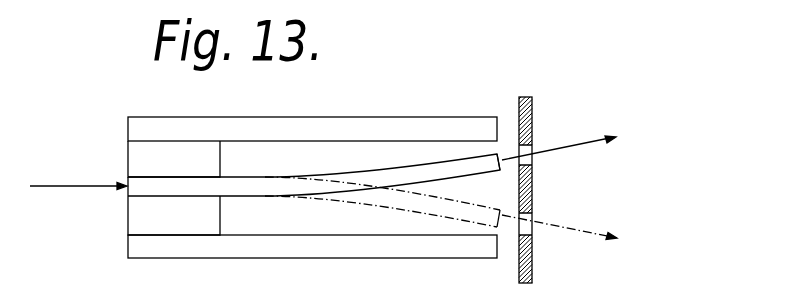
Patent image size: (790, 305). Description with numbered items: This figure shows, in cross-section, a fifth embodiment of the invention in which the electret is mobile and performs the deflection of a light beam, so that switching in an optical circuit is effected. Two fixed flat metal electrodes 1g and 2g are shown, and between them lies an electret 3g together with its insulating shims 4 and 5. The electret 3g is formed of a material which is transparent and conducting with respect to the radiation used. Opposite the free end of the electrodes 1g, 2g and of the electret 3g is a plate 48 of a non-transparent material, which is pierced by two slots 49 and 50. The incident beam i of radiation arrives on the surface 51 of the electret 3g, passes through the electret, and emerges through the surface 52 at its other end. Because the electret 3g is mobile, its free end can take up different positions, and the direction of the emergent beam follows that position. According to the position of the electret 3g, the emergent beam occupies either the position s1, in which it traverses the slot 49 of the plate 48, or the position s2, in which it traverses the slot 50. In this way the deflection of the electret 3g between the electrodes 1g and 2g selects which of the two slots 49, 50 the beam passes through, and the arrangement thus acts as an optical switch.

The fixed flat metal electrode 1g is at (307, 128).
The fixed flat metal electrode 2g is at (298, 250).
The electret 3g is at (405, 172).
The insulating shim 4 is at (148, 163).
The insulating shim 5 is at (150, 215).
The surface of the electret 51 is at (127, 192).
The surface of the electret 52 is at (500, 153).
The plate 48 is at (530, 123).
The slot 49 is at (531, 158).
The slot 50 is at (528, 220).
The incident beam i is at (70, 185).
The emergent beam position s1 is at (575, 140).
The emergent beam position s2 is at (575, 234).